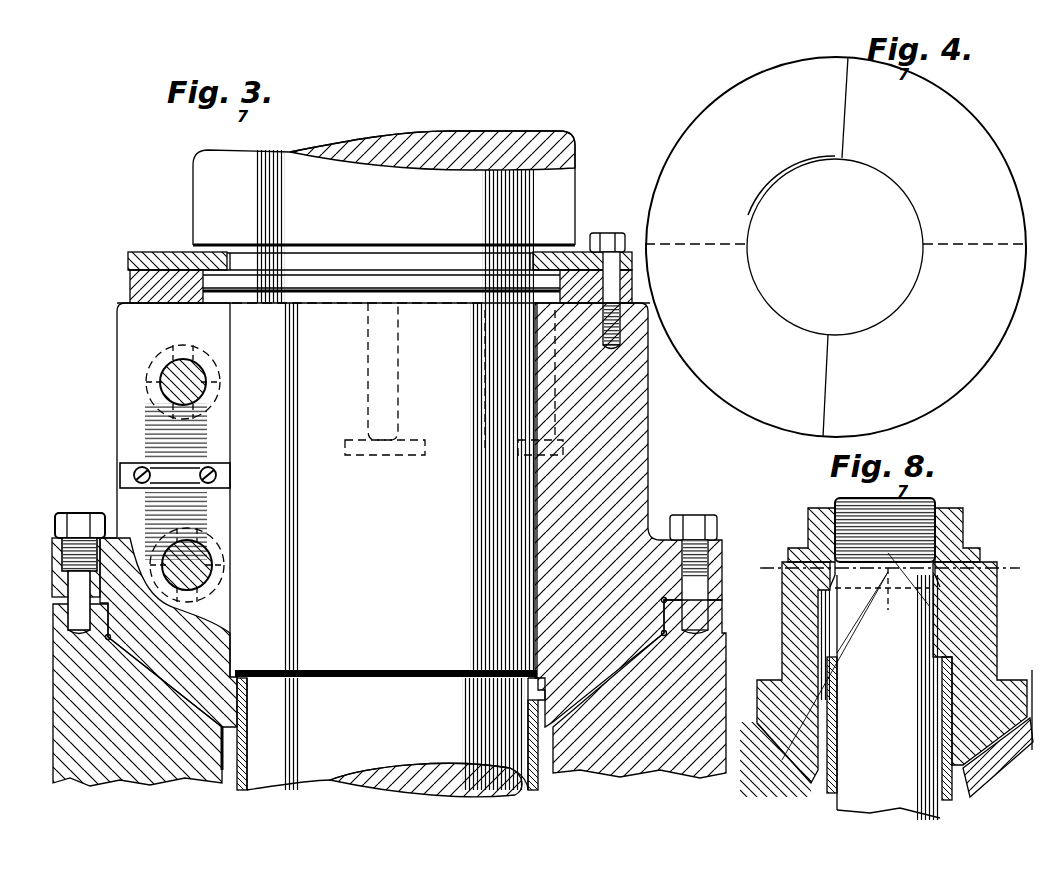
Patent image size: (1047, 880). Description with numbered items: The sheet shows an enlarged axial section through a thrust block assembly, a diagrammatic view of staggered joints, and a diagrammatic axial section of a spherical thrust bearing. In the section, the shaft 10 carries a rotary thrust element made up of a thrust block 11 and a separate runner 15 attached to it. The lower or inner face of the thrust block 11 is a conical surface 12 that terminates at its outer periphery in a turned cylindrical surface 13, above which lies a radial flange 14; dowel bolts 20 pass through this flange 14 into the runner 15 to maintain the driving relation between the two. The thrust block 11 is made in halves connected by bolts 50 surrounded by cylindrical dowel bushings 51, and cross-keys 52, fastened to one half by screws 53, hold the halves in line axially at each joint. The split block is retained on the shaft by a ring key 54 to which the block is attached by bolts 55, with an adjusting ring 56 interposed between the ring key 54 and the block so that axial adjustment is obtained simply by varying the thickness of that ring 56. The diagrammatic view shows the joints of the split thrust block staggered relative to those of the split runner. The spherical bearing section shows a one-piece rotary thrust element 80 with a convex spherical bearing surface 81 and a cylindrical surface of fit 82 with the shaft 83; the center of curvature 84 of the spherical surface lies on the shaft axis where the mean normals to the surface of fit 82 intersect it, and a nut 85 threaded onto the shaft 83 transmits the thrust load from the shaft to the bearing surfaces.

In FIG. 3, the shaft 10 is at (563, 190).
In FIG. 3, the thrust block 11 is at (637, 462).
In FIG. 3, the conical surface 12 is at (150, 673).
In FIG. 3, the turned cylindrical surface 13 is at (115, 613).
In FIG. 3, the radial flange 14 is at (58, 583).
In FIG. 3, the runner 15 is at (65, 650).
In FIG. 3, the dowel bolts 20 is at (77, 520).
In FIG. 3, the bolts 50 is at (187, 387).
In FIG. 3, the cylindrical dowel bushings 51 is at (219, 362).
In FIG. 3, the cross-keys 52 is at (190, 468).
In FIG. 3, the screws 53 is at (218, 474).
In FIG. 3, the ring key 54 is at (165, 257).
In FIG. 4, the ring key 54 is at (962, 120).
In FIG. 3, the bolts 55 is at (607, 240).
In FIG. 3, the adjusting ring 56 is at (130, 288).
In FIG. 8, the rotary thrust element 80 is at (797, 637).
In FIG. 8, the convex spherical bearing surface 81 is at (790, 763).
In FIG. 8, the cylindrical surface of fit 82 is at (945, 572).
In FIG. 8, the shaft 83 is at (910, 752).
In FIG. 8, the center of curvature 84 is at (940, 548).
In FIG. 8, the nut 85 is at (812, 520).